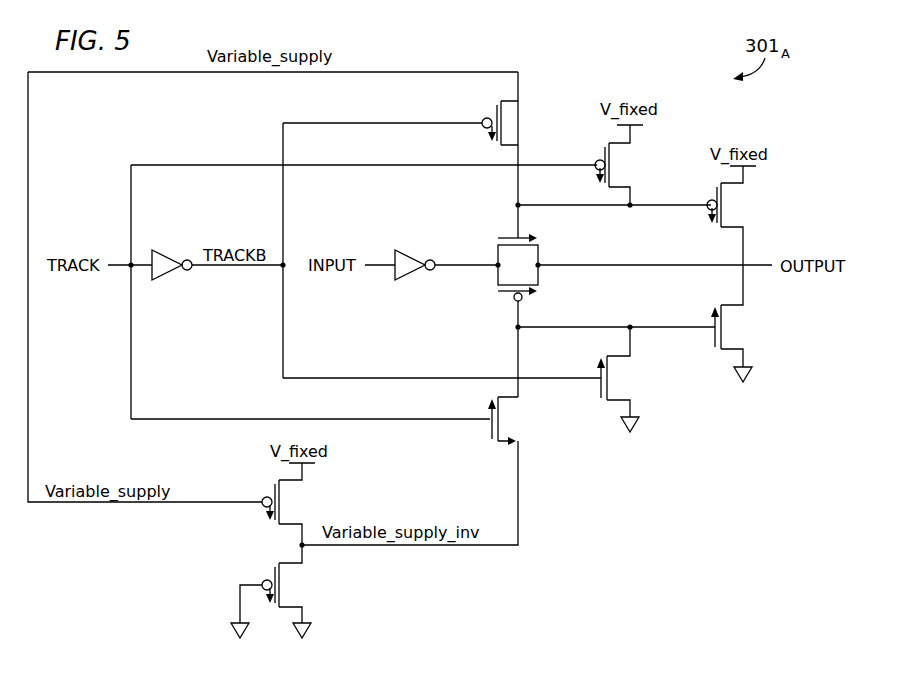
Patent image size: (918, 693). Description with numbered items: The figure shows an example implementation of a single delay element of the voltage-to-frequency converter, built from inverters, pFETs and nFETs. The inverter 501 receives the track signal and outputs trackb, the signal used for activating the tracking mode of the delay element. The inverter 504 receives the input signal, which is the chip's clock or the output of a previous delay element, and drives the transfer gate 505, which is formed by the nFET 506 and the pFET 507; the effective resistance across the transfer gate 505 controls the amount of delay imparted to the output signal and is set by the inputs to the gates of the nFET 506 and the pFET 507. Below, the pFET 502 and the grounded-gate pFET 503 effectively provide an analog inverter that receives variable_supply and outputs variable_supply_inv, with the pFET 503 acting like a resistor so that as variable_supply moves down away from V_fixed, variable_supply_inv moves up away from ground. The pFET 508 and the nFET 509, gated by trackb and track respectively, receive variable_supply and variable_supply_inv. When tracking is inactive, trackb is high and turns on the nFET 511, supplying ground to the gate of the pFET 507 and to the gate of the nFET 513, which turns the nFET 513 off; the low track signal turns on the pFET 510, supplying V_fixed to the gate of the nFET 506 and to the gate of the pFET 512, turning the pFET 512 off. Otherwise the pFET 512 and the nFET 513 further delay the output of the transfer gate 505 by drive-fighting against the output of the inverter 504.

The inverter 501 is at (165, 279).
The pFET 502 is at (270, 492).
The pFET 503 is at (270, 575).
The inverter 504 is at (410, 278).
The transfer gate 505 is at (550, 246).
The nFET 506 is at (506, 237).
The pFET 507 is at (509, 296).
The pFET 508 is at (492, 110).
The nFET 509 is at (490, 430).
The pFET 510 is at (604, 150).
The nFET 511 is at (600, 392).
The pFET 512 is at (714, 192).
The nFET 513 is at (712, 345).